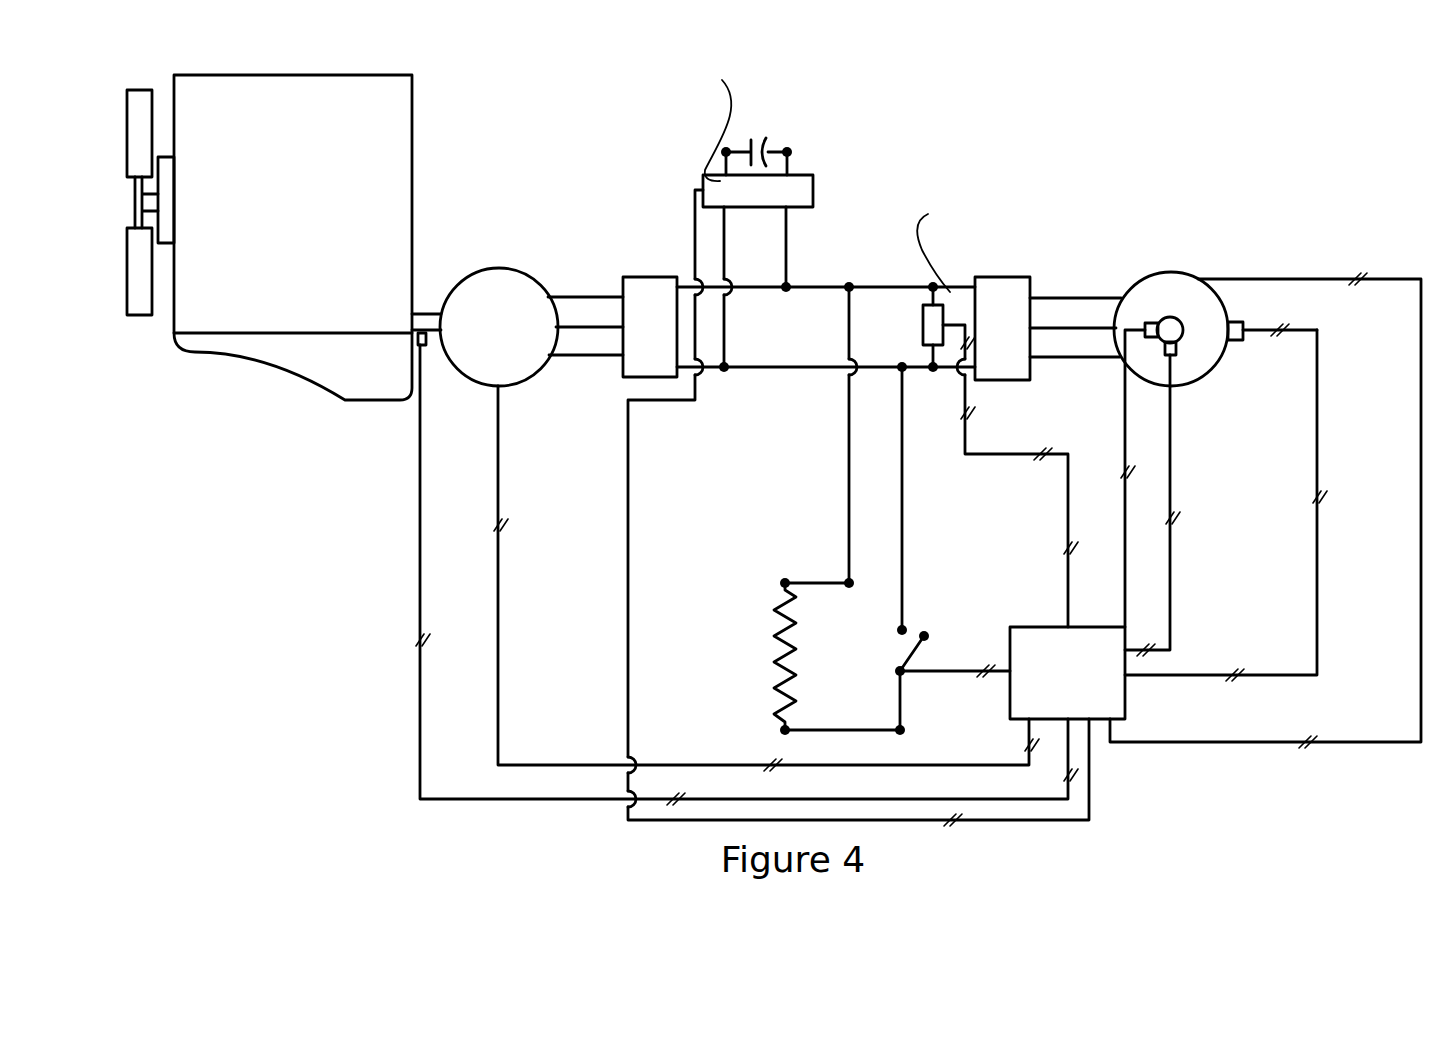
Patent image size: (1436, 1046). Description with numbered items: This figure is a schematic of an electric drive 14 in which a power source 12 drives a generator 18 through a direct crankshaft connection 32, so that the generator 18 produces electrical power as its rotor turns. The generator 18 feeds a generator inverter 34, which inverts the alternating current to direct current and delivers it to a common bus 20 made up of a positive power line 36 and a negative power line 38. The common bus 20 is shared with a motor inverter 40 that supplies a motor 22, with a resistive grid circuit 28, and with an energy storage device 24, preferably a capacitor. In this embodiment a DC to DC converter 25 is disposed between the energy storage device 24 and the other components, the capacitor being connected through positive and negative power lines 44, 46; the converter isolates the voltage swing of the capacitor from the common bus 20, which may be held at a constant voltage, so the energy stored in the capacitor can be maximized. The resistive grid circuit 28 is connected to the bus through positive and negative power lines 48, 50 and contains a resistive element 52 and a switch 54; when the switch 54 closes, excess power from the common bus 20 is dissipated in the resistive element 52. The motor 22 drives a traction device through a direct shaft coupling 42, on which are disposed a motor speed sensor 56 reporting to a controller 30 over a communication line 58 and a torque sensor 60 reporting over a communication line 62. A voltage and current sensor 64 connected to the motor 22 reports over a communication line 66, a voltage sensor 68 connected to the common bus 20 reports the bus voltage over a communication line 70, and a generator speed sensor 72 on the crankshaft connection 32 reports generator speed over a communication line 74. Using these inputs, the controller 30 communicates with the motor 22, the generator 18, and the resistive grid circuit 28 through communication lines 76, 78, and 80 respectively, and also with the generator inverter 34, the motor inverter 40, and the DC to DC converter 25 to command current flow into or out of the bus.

The power source 12 is at (414, 92).
The electric drive 14 is at (899, 201).
The generator 18 is at (556, 280).
The common bus 20 is at (858, 505).
The motor 22 is at (1195, 273).
The energy storage device 24 is at (776, 136).
The DC to DC converter 25 is at (703, 185).
The resistive grid circuit 28 is at (844, 508).
The controller 30 is at (1010, 629).
The crankshaft connection 32 is at (426, 308).
The generator inverter 34 is at (611, 278).
The positive power line 36 is at (857, 287).
The negative power line 38 is at (768, 370).
The motor inverter 40 is at (1028, 290).
The direct shaft coupling 42 is at (1147, 340).
The positive power line 44 is at (813, 185).
The negative power line 46 is at (726, 336).
The positive power line 48 is at (850, 513).
The negative power line 50 is at (902, 514).
The resistive element 52 is at (780, 630).
The switch 54 is at (928, 648).
The motor speed sensor 56 is at (1176, 338).
The communication line 58 is at (1170, 593).
The torque sensor 60 is at (1128, 300).
The communication line 62 is at (1125, 545).
The voltage and current sensor 64 is at (1246, 324).
The communication line 66 is at (1318, 642).
The voltage sensor 68 is at (923, 325).
The communication line 70 is at (1018, 454).
The generator speed sensor 72 is at (428, 338).
The communication line 74 is at (421, 797).
The communication line 76 is at (1222, 742).
The communication line 78 is at (545, 765).
The communication line 80 is at (960, 673).